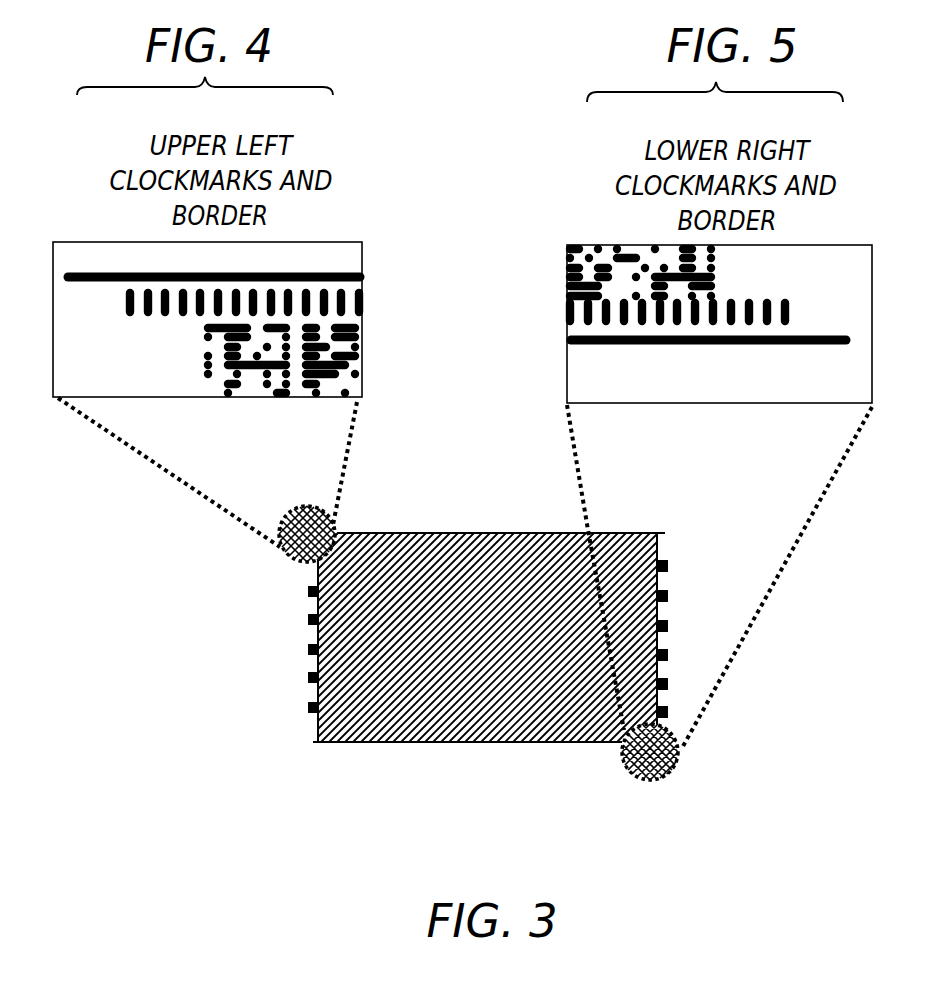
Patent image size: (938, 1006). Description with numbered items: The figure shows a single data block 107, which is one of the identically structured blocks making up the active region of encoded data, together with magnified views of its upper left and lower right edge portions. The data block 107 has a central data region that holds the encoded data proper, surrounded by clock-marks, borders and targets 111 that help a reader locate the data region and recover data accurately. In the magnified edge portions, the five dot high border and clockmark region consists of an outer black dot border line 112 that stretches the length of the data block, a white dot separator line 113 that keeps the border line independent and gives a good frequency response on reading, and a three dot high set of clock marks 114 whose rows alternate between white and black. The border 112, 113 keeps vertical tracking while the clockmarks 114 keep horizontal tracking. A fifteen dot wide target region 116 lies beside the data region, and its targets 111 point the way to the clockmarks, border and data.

In FIG. 3, the data block 107 is at (297, 811).
In FIG. 5, the targets 111 is at (628, 357).
In FIG. 4, the outer black dot border line 112 is at (328, 262).
In FIG. 4, the white dot separator line 113 is at (118, 280).
In FIG. 4, the clock marks 114 is at (118, 330).
In FIG. 4, the target region 116 is at (149, 378).